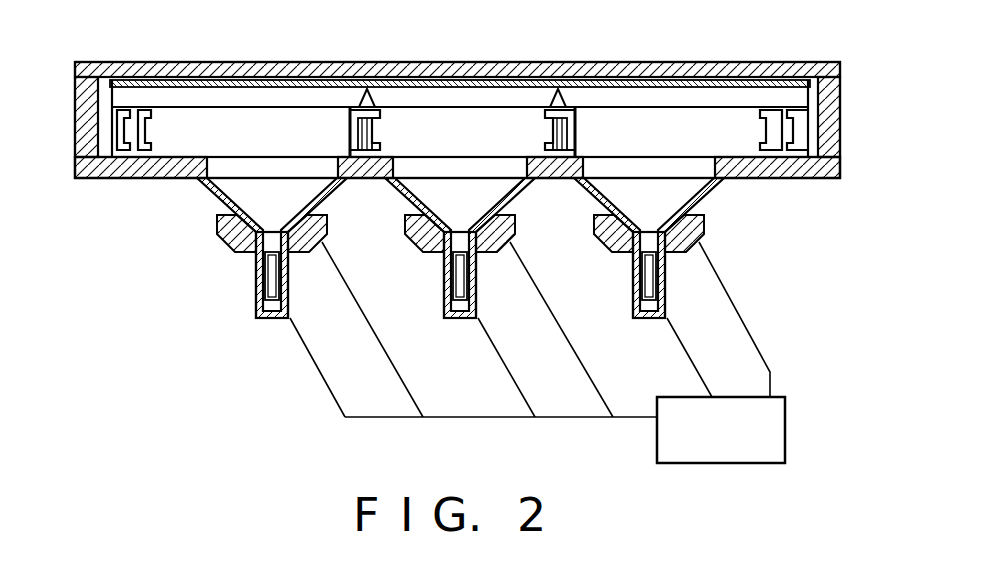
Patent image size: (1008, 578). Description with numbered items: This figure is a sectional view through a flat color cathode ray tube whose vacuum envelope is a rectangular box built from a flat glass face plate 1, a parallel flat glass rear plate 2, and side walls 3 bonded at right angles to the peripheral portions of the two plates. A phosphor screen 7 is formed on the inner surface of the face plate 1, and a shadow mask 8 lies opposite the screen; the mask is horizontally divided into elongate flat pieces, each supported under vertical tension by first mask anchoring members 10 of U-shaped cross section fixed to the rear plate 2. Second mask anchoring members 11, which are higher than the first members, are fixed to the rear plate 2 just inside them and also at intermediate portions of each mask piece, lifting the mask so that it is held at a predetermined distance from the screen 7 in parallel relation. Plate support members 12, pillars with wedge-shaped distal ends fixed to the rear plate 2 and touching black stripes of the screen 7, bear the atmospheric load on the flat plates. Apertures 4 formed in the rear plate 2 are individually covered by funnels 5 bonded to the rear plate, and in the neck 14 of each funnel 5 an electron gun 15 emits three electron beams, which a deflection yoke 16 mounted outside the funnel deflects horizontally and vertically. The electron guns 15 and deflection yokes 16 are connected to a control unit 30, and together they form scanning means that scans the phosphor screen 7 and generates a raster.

The face plate 1 is at (637, 62).
The rear plate 2 is at (560, 186).
The side walls 3 is at (845, 137).
The apertures 4 is at (620, 170).
The funnels 5 is at (213, 197).
The phosphor screen 7 is at (447, 90).
The shadow mask 8 is at (257, 107).
The first mask anchoring members 10 is at (117, 150).
The second mask anchoring members 11 is at (150, 134).
The plate support members 12 is at (375, 131).
The neck 14 is at (293, 298).
The electron gun 15 is at (262, 297).
The deflection yoke 16 is at (235, 247).
The control unit 30 is at (693, 465).